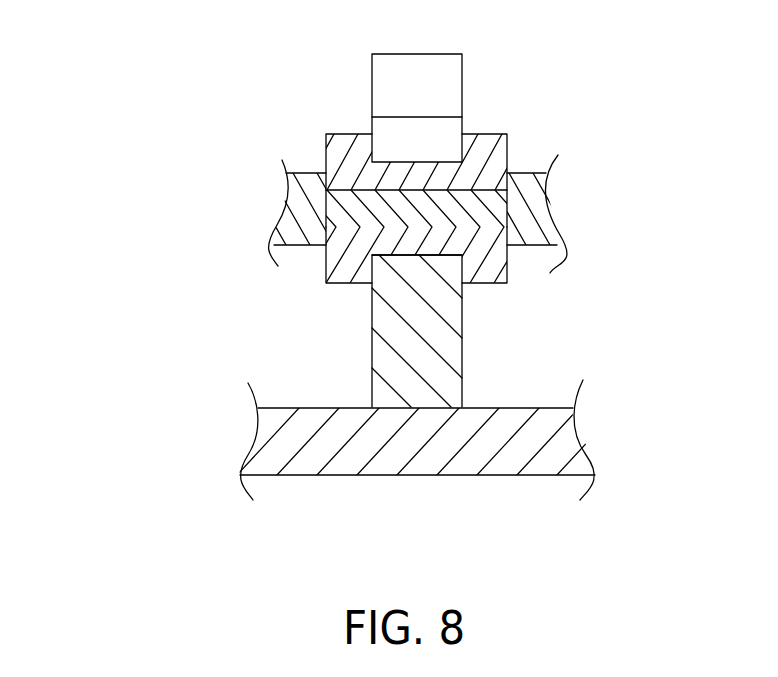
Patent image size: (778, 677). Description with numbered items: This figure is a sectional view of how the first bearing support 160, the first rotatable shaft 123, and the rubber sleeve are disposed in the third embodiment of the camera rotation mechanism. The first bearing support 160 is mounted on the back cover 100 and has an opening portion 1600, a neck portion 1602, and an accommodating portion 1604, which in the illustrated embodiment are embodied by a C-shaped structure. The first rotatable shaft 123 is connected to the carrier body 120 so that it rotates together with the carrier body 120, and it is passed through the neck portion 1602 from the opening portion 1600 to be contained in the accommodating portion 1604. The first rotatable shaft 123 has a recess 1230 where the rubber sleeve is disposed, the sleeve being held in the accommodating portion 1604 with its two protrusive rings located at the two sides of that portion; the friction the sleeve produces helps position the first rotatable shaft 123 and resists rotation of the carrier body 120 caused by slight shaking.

The back cover 100 is at (487, 445).
The carrier body 120 is at (442, 212).
The first rotatable shaft 123 is at (530, 195).
The recess 1230 is at (486, 228).
The first bearing support 160 is at (326, 202).
The opening portion 1600 is at (398, 79).
The neck portion 1602 is at (415, 144).
The accommodating portion 1604 is at (407, 278).